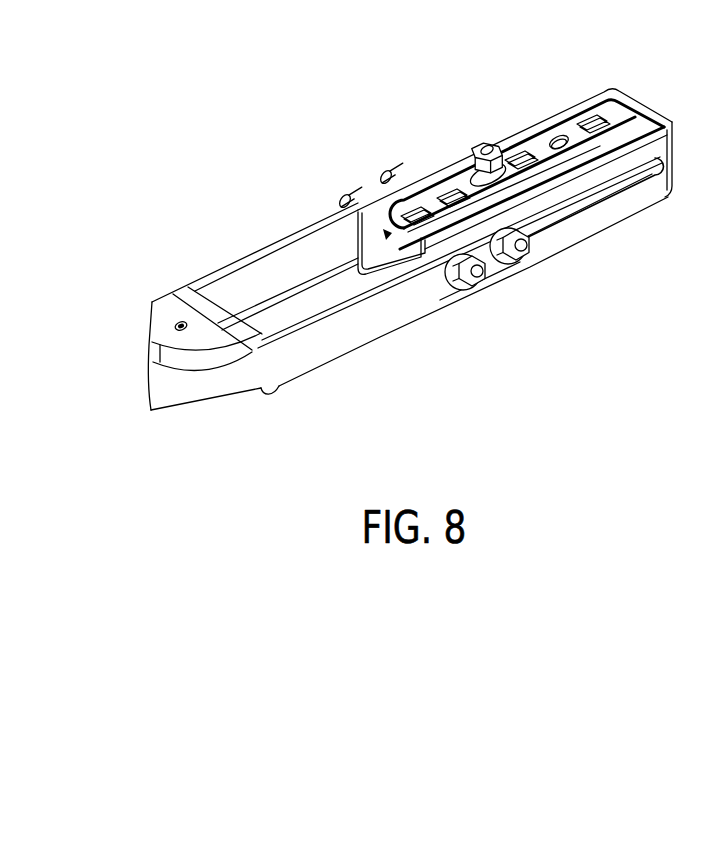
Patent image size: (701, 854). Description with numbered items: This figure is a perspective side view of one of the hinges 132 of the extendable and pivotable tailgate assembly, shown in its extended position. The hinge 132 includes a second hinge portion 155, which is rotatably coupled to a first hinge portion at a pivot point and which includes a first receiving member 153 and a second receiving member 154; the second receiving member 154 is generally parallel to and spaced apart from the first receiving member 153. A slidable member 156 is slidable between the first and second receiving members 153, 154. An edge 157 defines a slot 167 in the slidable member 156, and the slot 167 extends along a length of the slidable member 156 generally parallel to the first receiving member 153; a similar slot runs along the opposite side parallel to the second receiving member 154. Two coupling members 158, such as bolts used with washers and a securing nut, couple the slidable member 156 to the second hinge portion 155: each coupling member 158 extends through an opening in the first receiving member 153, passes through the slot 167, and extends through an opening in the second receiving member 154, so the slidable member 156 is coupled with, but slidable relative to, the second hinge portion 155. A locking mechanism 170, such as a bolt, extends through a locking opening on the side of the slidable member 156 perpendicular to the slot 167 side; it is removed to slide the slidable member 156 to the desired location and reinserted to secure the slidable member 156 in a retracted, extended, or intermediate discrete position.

The hinge 132 is at (366, 127).
The first receiving member 153 is at (330, 340).
The second receiving member 154 is at (251, 292).
The second hinge portion 155 is at (214, 388).
The slidable member 156 is at (526, 131).
The edge 157 is at (563, 230).
The coupling member 158 is at (519, 264).
The slot 167 is at (605, 202).
The locking mechanism 170 is at (479, 143).